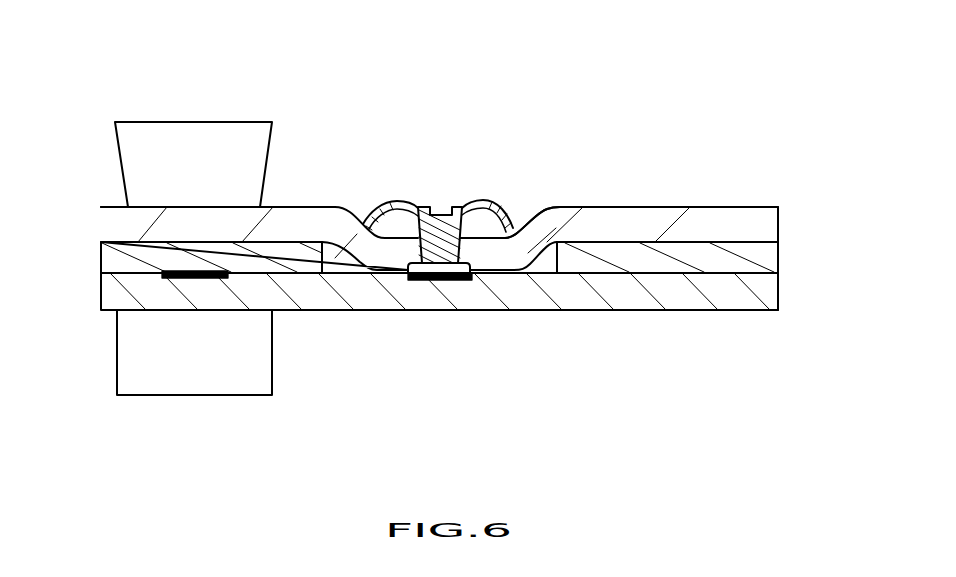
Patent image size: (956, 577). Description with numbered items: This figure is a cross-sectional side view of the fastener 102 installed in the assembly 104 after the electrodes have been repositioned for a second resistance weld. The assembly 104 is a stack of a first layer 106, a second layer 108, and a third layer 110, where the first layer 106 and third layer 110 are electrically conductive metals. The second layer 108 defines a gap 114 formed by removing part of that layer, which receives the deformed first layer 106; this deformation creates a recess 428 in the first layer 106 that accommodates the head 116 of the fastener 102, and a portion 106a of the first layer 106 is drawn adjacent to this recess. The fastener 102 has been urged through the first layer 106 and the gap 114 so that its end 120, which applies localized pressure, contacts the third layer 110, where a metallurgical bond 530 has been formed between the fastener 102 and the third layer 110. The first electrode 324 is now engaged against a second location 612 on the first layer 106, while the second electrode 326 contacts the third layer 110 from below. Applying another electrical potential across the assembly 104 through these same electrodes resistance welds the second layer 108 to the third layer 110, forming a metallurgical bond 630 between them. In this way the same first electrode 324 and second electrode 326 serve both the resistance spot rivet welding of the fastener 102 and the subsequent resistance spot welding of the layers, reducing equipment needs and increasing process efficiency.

The fastener 102 is at (505, 228).
The assembly 104 is at (787, 200).
The first layer 106 is at (703, 208).
The recess in top layer 106a is at (650, 208).
The second layer 108 is at (713, 262).
The third layer 110 is at (605, 290).
The gap 114 is at (553, 258).
The head 116 is at (498, 197).
The end 120 is at (462, 222).
The first electrode 324 is at (175, 142).
The second electrode 326 is at (243, 375).
The recess 428 is at (400, 233).
The metallurgical bond 530 is at (407, 278).
The second location 612 is at (173, 207).
The metallurgical bond 630 is at (162, 274).